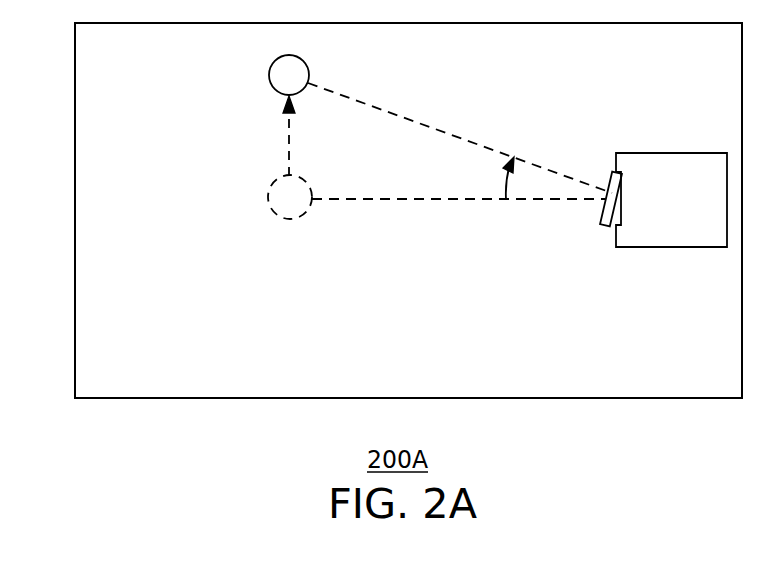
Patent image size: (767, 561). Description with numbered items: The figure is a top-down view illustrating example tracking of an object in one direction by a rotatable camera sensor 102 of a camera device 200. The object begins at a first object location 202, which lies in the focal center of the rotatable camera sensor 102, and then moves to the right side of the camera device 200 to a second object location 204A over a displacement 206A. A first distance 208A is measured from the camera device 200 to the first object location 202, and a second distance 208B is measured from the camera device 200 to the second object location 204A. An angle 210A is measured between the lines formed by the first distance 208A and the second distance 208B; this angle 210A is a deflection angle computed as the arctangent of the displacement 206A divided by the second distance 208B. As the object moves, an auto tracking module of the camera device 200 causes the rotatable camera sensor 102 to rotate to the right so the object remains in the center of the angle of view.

The rotatable camera sensor 102 is at (601, 226).
The camera device 200 is at (667, 153).
The first object location 202 is at (275, 213).
The second object location 204A is at (272, 67).
The displacement 206A is at (289, 134).
The first distance 208A is at (447, 200).
The second distance 208B is at (401, 118).
The angle 210A is at (484, 178).